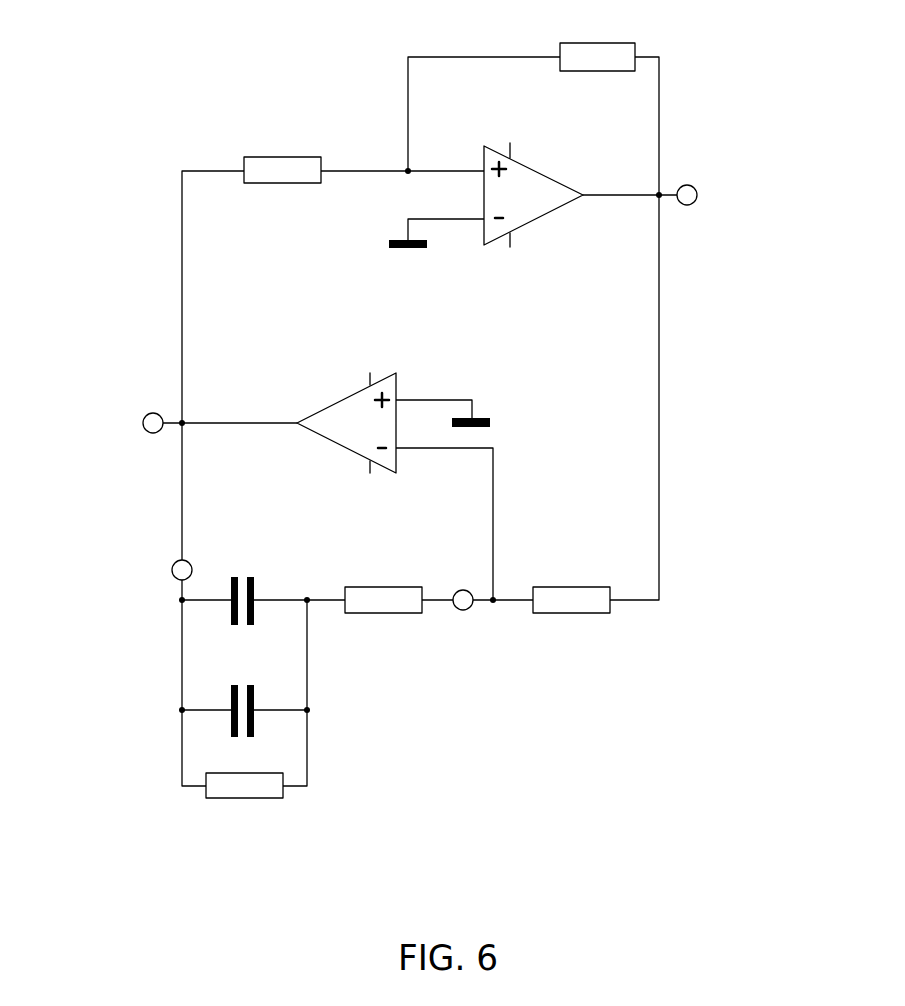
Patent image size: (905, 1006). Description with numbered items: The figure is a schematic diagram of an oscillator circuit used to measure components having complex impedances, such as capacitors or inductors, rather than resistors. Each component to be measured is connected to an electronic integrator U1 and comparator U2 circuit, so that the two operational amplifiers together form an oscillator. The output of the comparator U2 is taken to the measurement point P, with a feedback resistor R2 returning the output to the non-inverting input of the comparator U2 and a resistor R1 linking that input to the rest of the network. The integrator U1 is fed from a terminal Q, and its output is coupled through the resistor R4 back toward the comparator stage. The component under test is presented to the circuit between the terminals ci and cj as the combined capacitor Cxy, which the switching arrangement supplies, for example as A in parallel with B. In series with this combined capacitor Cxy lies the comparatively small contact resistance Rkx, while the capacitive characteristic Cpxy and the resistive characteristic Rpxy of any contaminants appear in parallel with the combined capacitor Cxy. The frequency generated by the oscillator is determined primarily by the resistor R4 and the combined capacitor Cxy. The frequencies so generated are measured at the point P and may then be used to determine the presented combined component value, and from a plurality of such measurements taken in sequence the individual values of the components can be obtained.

The resistor R1 is at (282, 148).
The resistor R2 is at (597, 37).
The resistor R4 is at (571, 579).
The contact resistance Rkx is at (383, 579).
The combined capacitor Cxy is at (242, 579).
The contaminant capacitance Cpxy is at (246, 692).
The contaminant resistance Rpxy is at (244, 768).
The electronic integrator U1 is at (346, 412).
The comparator U2 is at (533, 185).
The measurement point P is at (703, 171).
The terminal Q is at (133, 402).
The terminal ci is at (165, 569).
The terminal cj is at (468, 622).